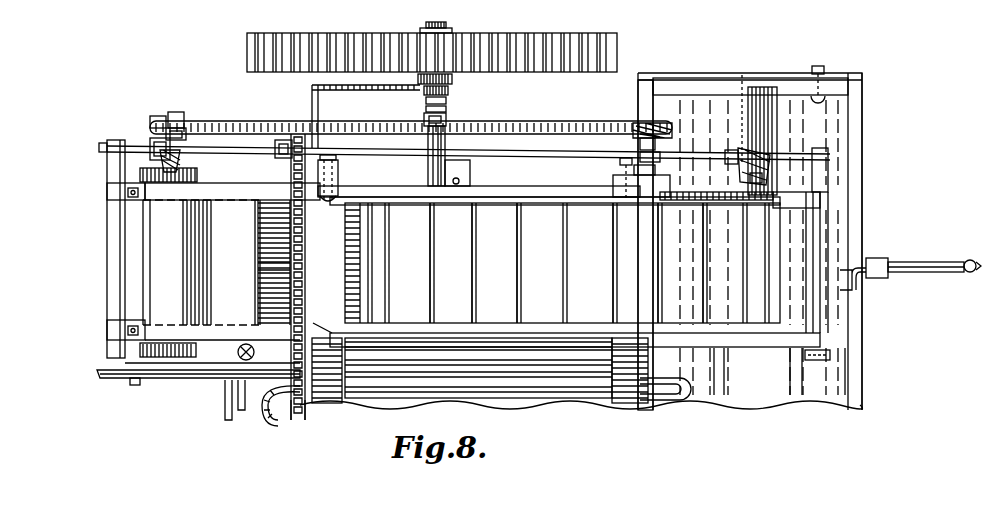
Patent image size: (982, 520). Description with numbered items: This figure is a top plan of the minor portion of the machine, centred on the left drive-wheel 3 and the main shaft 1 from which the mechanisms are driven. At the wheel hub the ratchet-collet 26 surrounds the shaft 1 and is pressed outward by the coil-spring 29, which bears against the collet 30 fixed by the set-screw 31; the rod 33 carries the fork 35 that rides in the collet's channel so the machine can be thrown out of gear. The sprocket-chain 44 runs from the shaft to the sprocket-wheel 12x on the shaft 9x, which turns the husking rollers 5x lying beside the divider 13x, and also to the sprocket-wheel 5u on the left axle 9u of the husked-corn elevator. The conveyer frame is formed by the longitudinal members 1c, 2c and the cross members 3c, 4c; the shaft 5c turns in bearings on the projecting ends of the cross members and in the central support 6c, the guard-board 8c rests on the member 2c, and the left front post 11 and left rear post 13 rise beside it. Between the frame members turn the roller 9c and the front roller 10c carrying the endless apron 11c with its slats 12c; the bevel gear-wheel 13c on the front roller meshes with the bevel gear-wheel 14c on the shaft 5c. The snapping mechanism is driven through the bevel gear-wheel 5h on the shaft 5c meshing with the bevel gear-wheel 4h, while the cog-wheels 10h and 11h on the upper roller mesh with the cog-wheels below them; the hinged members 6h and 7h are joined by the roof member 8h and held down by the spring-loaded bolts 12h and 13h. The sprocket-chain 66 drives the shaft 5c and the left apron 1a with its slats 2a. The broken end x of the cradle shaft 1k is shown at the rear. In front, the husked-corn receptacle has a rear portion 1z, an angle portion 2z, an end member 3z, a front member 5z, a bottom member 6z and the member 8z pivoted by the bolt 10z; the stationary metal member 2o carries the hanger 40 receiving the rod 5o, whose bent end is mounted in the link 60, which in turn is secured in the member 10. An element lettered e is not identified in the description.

The left drive-wheel 3 is at (260, 33).
The main shaft 1 is at (446, 26).
The fork 35 is at (452, 80).
The ratchet-collet 26 is at (448, 91).
The coil-spring 29 is at (446, 100).
The collet 30 is at (446, 109).
The set-screw 31 is at (446, 119).
The rod 33 is at (312, 92).
The sprocket-chain 44 is at (228, 121).
The sprocket-wheel 12x is at (158, 116).
The shaft 9x is at (176, 112).
The bevel gear-wheel 5h is at (150, 145).
The bevel gear-wheel 4h is at (158, 162).
The cog-wheel 11h is at (198, 170).
The cross member 4c is at (107, 213).
The member 6h is at (107, 192).
The bolt 13h is at (128, 190).
The member 8h is at (201, 262).
The rollers 5x is at (258, 238).
The divider 13x is at (258, 265).
The broken end x is at (100, 374).
The roller 9c is at (278, 155).
The left rear post 13 is at (338, 172).
The support 6c is at (472, 174).
The shaft 5c is at (558, 156).
The guard-board 8c is at (581, 197).
The left front post 11 is at (620, 180).
The rear portion 1z is at (638, 107).
The sprocket-wheel 5u is at (652, 122).
The left axle 9u is at (645, 130).
The end member 3z is at (710, 73).
The member 8z is at (838, 78).
The front member 5z is at (862, 134).
The bolt 10z is at (818, 66).
The bevel gear-wheel 14c is at (742, 168).
The bevel gear-wheel 13c is at (762, 178).
The front roller 10c is at (774, 210).
The longitudinal member 2c is at (820, 200).
The cross member 3c is at (820, 217).
The endless apron 11c is at (566, 263).
The slats 12c is at (517, 245).
The longitudinal member 1c is at (397, 338).
The left-hand apron 1a is at (478, 368).
The slats or strips 2a is at (483, 366).
The link 60 is at (918, 262).
The member 10 is at (918, 274).
The hanger 40 is at (855, 284).
The stationary member 2o is at (832, 352).
The rod 5o is at (850, 380).
The angle portion 2z is at (722, 390).
The member 6z is at (798, 388).
The hook e is at (270, 424).
The sprocket-chain 66 is at (297, 420).
The main shaft 1k is at (162, 378).
The cog-wheel 10h is at (190, 358).
The bolt 12h is at (128, 328).
The member 7h is at (107, 334).